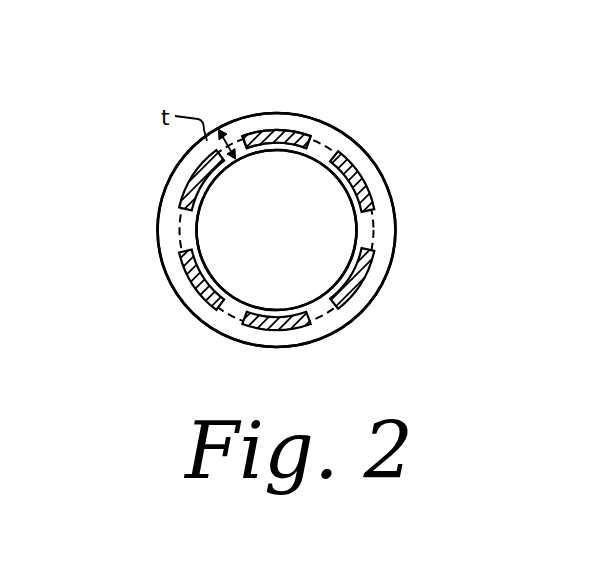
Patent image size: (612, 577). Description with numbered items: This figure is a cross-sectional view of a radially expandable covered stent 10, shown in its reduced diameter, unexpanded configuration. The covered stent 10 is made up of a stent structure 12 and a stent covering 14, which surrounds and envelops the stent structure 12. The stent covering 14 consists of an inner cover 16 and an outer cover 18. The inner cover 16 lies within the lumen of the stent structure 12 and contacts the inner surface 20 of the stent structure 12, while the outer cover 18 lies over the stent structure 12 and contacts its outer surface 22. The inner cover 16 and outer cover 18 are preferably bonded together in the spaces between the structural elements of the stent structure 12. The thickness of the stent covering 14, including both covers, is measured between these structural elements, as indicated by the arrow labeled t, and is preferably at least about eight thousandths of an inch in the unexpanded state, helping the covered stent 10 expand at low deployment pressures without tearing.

The covered stent 10 is at (150, 63).
The stent structure 12 is at (363, 180).
The stent covering 14 is at (335, 127).
The inner cover 16 is at (358, 231).
The outer cover 18 is at (388, 235).
The inner surface 20 is at (280, 150).
The outer surface 22 is at (277, 136).